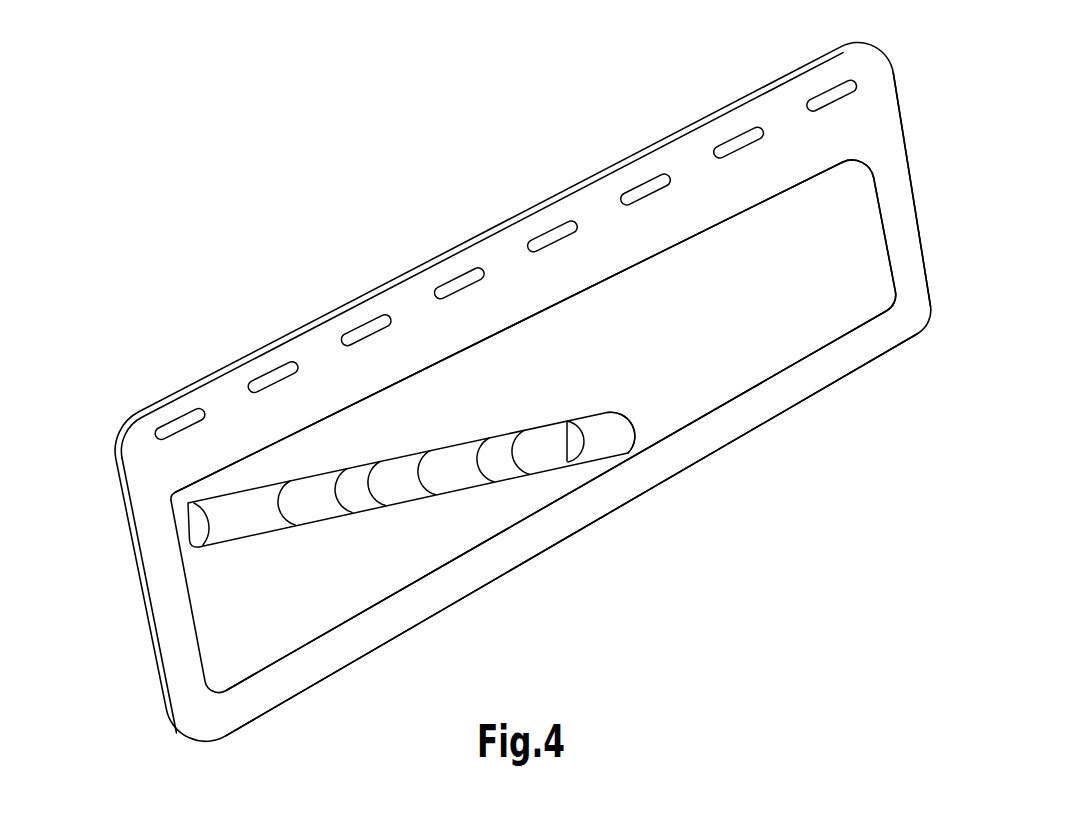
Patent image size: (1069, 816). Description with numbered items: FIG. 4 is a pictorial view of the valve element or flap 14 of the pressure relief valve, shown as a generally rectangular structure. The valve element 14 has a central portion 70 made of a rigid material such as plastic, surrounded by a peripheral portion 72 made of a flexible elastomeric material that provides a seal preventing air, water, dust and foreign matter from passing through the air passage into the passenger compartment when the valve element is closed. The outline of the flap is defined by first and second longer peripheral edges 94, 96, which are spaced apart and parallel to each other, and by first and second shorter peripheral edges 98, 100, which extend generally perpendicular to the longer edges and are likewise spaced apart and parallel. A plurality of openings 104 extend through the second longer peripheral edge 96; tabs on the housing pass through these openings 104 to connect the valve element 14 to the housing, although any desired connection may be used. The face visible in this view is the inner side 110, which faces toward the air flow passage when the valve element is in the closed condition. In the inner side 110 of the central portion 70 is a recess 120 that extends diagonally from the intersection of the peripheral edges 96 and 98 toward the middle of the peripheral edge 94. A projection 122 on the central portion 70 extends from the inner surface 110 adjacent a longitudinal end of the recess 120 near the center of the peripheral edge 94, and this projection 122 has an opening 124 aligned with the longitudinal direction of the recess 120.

The valve element 14 is at (948, 86).
The central portion 70 is at (785, 330).
The peripheral portion 72 is at (680, 205).
The first longer peripheral edge 94 is at (640, 490).
The second longer peripheral edge 96 is at (458, 245).
The first shorter peripheral edge 98 is at (147, 590).
The second shorter peripheral edge 100 is at (917, 223).
The openings 104 is at (362, 318).
The inner side 110 is at (680, 337).
The recess 120 is at (326, 497).
The projection 122 is at (610, 432).
The opening 124 is at (566, 440).